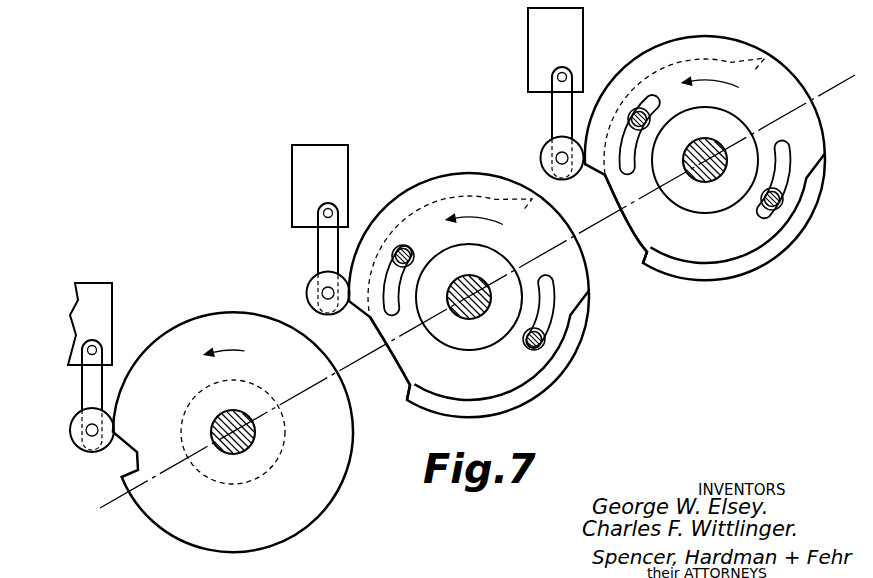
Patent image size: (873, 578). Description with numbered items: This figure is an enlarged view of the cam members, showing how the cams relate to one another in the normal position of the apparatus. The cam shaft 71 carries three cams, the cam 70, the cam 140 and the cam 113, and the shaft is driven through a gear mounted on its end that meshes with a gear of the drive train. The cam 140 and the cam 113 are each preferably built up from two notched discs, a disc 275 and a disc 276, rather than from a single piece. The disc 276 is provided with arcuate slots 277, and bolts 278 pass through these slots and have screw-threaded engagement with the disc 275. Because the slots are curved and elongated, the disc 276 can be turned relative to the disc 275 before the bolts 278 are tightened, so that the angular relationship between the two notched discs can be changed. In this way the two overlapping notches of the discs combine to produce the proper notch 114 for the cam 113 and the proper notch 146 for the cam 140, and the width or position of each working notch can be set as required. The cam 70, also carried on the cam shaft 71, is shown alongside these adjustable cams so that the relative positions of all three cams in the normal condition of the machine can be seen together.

The cam 70 is at (300, 521).
The cam shaft 71 is at (238, 450).
The cam 113 is at (687, 246).
The notch 114 is at (647, 252).
The cam 140 is at (510, 380).
The notch 146 is at (390, 363).
The notched disc 275 is at (657, 264).
The notched disc 276 is at (645, 225).
The arcuate slots 277 is at (786, 158).
The bolts 278 is at (780, 202).